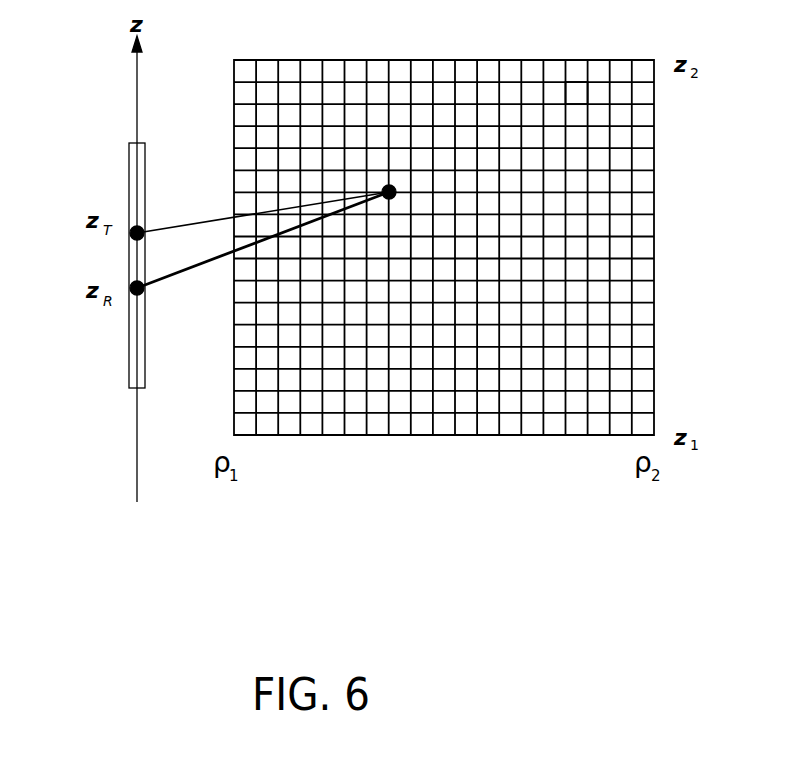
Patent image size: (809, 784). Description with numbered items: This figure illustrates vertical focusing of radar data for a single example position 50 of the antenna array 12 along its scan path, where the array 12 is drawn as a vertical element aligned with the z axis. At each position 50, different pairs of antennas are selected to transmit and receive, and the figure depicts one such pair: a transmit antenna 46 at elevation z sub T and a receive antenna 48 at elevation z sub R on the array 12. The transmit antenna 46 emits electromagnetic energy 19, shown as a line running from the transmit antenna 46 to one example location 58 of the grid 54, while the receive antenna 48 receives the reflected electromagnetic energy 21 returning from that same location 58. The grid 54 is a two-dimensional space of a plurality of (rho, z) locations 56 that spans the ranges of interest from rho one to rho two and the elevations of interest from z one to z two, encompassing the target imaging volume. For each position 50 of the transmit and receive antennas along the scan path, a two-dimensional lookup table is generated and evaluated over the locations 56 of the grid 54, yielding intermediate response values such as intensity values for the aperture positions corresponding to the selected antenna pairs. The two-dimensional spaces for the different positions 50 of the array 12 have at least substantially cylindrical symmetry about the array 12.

The antenna array 12 is at (128, 175).
The transmit antenna 46 is at (145, 228).
The receive antenna 48 is at (145, 292).
The electromagnetic energy 19 is at (197, 222).
The electromagnetic energy 21 is at (190, 270).
The position 50 is at (137, 255).
The grid 54 is at (653, 230).
The locations 56 is at (565, 82).
The location 58 is at (392, 186).